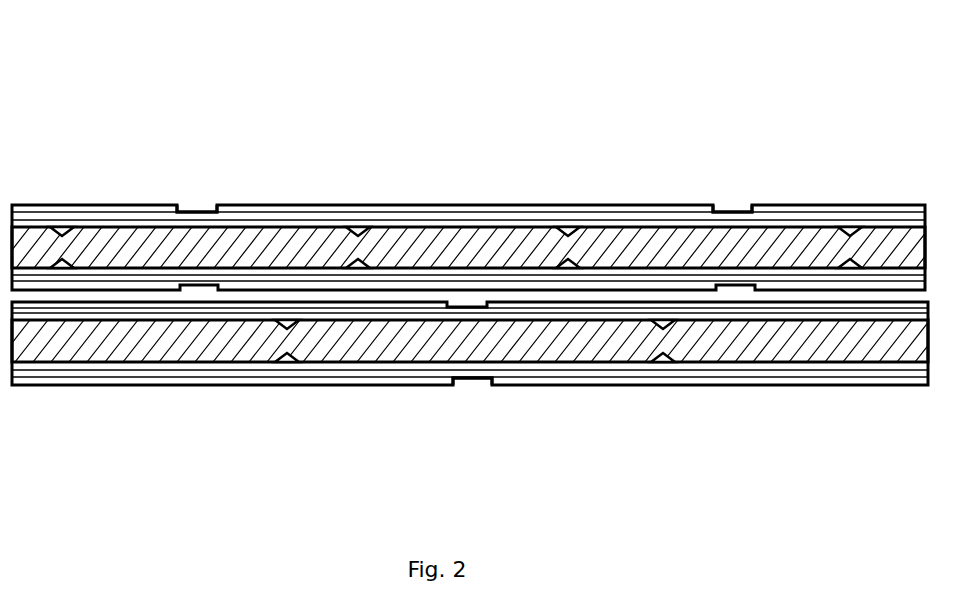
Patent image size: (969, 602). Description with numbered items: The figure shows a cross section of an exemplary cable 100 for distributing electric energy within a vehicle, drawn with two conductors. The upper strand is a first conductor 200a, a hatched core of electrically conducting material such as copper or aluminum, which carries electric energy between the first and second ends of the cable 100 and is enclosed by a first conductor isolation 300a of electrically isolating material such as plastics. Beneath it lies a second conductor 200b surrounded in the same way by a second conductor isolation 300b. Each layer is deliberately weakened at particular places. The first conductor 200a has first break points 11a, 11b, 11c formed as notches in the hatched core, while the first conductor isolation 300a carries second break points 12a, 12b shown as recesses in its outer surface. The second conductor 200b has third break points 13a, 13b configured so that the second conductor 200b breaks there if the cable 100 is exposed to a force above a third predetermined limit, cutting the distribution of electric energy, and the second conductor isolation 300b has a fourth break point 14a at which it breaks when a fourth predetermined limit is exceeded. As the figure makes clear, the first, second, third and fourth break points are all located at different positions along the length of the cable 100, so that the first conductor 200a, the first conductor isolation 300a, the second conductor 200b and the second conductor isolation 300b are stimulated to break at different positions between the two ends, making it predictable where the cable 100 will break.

The cable 100 is at (466, 88).
The first conductor 200a is at (156, 245).
The second conductor 200b is at (166, 347).
The first conductor isolation 300a is at (305, 200).
The second conductor isolation 300b is at (213, 388).
The first break point 11a is at (362, 200).
The first break point 11b is at (572, 200).
The first break point 11c is at (853, 200).
The second break point 12a is at (200, 200).
The second break point 12b is at (736, 200).
The third break point 13a is at (287, 388).
The third break point 13b is at (664, 388).
The fourth break point 14a is at (472, 388).